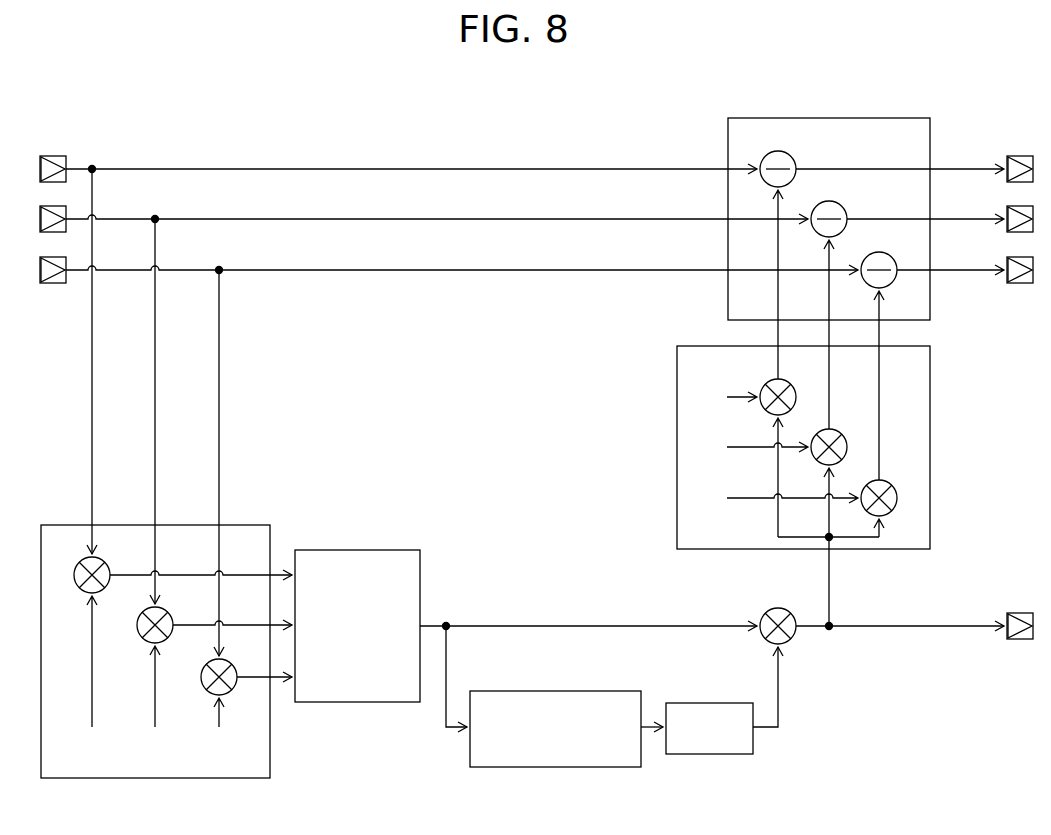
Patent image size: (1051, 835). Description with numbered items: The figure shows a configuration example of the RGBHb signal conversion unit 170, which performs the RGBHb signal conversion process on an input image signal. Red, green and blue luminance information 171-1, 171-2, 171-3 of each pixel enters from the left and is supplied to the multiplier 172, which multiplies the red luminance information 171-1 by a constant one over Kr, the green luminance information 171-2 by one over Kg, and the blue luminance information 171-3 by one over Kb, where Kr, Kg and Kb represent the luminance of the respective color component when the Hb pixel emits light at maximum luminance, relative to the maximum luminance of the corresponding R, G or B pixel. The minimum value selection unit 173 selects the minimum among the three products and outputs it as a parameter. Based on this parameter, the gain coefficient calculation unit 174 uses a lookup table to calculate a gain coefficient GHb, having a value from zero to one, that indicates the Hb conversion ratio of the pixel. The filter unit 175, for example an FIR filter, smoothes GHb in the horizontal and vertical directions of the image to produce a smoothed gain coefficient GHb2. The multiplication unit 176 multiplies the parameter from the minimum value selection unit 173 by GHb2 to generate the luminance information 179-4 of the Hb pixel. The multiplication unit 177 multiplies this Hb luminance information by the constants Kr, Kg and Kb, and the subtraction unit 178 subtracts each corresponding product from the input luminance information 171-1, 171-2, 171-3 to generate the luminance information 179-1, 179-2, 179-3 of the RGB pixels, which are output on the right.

The RGBHb signal conversion unit 170 is at (308, 92).
The luminance information (R) 171-1 is at (264, 156).
The luminance information (G) 171-2 is at (264, 206).
The luminance information (B) 171-3 is at (264, 257).
The multiplier 172 is at (194, 779).
The minimum value selection unit 173 is at (412, 538).
The gain coefficient calculation unit 174 is at (562, 688).
The filter unit 175 is at (706, 704).
The multiplication unit 176 is at (776, 607).
The multiplication unit 177 is at (676, 412).
The subtraction unit 178 is at (856, 120).
The luminance information of R pixel 179-1 is at (969, 170).
The luminance information of G pixel 179-2 is at (969, 220).
The luminance information of B pixel 179-3 is at (969, 271).
The luminance information of Hb pixel 179-4 is at (979, 624).